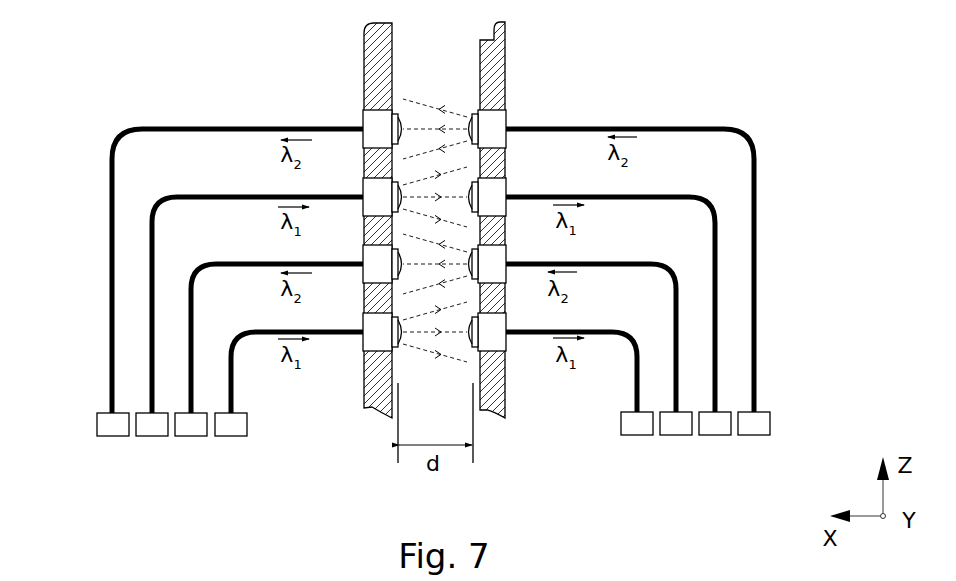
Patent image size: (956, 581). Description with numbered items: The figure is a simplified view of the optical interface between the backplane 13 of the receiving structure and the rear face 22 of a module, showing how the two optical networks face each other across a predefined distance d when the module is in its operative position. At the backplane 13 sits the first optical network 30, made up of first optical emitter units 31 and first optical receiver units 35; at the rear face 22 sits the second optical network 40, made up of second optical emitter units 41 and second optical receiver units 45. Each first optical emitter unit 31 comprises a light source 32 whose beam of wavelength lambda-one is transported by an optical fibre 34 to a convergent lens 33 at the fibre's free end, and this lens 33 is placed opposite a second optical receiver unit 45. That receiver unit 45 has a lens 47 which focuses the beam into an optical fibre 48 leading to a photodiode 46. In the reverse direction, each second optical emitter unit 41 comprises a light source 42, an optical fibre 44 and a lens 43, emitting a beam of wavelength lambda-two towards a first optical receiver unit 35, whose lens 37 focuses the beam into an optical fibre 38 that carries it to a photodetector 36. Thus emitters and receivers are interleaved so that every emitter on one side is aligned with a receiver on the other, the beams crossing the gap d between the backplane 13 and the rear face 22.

The backplane 13 is at (373, 58).
The rear face 22 is at (497, 70).
The first optical network 30 is at (104, 87).
The first optical emitter unit 31 is at (336, 352).
The light source 32 is at (154, 425).
The lens 33 is at (398, 342).
The optical fibre 34 is at (153, 243).
The first optical receiver unit 35 is at (312, 114).
The photodetector 36 is at (115, 425).
The lens 37 is at (397, 136).
The optical fibre 38 is at (110, 190).
The second optical network 40 is at (740, 91).
The second optical emitter unit 41 is at (530, 116).
The light source 42 is at (678, 424).
The lens 43 is at (473, 136).
The optical fibre 44 is at (757, 270).
The second optical receiver unit 45 is at (539, 359).
The photodiode 46 is at (639, 424).
The lens 47 is at (468, 340).
The optical fibre 48 is at (713, 290).